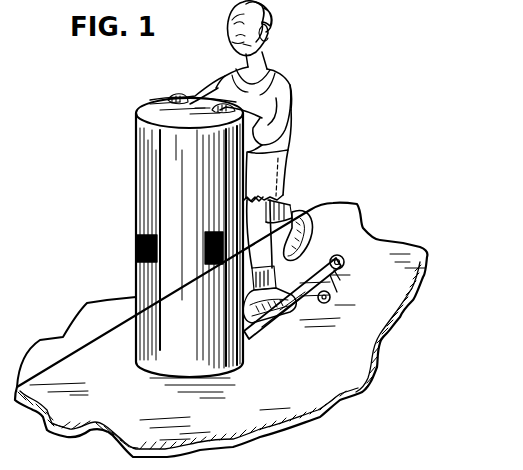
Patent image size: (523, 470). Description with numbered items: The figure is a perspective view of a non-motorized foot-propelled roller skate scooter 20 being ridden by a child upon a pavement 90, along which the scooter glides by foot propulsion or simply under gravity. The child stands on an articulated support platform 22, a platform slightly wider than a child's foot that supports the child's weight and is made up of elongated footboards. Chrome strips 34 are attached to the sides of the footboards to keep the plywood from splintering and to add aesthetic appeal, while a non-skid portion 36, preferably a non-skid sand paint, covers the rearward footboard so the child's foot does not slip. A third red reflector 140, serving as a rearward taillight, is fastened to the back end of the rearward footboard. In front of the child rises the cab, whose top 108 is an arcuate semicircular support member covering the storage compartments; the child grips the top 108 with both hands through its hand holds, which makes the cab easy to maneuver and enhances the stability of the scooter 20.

The foot-propelled roller skate scooter 20 is at (136, 197).
The top 108 is at (157, 101).
The articulated support platform 22 is at (318, 270).
The third red reflector 140 is at (344, 262).
The chrome strips 34 is at (333, 280).
The non-skid portion 36 is at (286, 306).
The pavement 90 is at (428, 257).